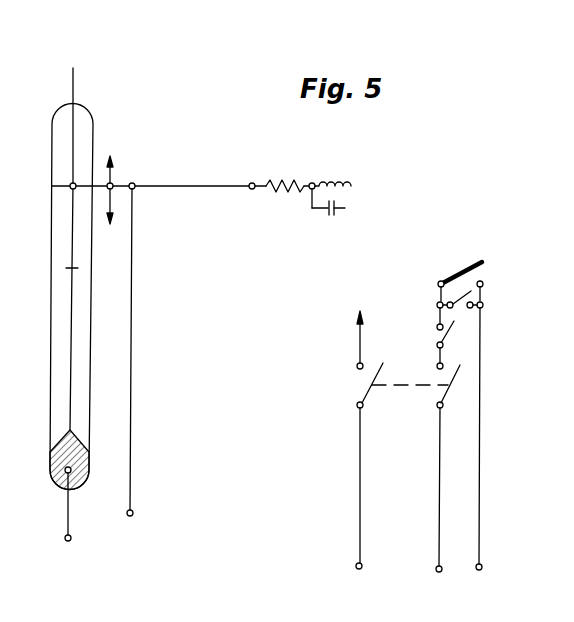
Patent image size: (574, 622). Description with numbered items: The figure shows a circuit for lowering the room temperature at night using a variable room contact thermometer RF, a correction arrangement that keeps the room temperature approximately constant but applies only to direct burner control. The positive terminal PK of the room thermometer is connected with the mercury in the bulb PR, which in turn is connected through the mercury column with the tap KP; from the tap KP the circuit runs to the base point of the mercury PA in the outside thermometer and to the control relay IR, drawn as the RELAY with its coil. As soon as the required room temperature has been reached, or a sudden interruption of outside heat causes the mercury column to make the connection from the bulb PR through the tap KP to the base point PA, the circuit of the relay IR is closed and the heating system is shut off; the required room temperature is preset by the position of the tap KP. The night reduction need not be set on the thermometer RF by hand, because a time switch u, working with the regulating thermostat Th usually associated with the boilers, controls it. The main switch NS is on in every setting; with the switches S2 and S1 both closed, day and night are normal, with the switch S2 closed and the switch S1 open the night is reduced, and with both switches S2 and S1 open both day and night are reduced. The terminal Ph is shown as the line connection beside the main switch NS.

The variable room contact thermometer RF is at (71, 95).
The tap KP is at (137, 297).
The bulb PR is at (54, 460).
The terminal PK is at (64, 518).
The base point of the mercury in the outside thermometer PA is at (122, 363).
The relay RELAY is at (282, 171).
The control relay IR is at (331, 185).
The time switch u is at (455, 258).
The switch S1 is at (460, 297).
The switch S2 is at (452, 338).
The main switch NS is at (342, 359).
The phase terminal Ph is at (354, 504).
The regulating thermostat Th is at (459, 454).